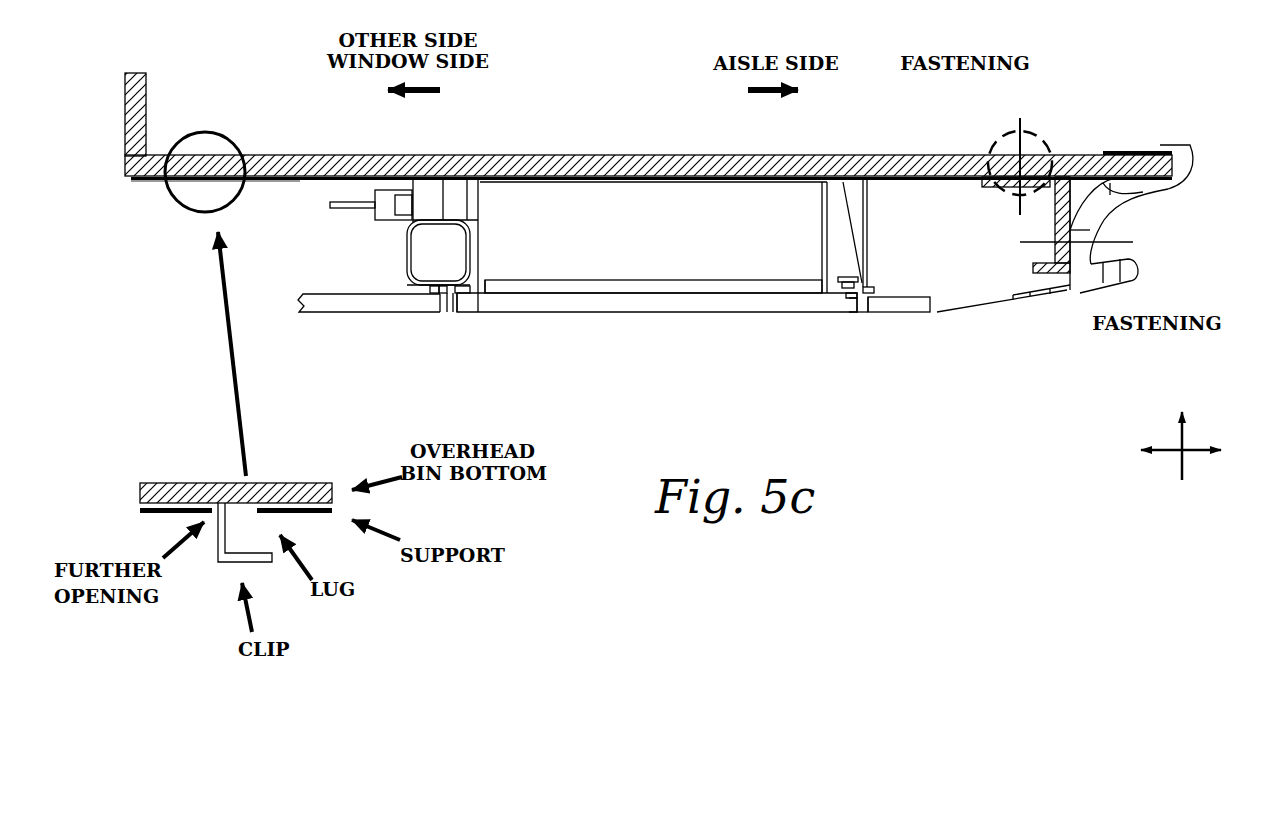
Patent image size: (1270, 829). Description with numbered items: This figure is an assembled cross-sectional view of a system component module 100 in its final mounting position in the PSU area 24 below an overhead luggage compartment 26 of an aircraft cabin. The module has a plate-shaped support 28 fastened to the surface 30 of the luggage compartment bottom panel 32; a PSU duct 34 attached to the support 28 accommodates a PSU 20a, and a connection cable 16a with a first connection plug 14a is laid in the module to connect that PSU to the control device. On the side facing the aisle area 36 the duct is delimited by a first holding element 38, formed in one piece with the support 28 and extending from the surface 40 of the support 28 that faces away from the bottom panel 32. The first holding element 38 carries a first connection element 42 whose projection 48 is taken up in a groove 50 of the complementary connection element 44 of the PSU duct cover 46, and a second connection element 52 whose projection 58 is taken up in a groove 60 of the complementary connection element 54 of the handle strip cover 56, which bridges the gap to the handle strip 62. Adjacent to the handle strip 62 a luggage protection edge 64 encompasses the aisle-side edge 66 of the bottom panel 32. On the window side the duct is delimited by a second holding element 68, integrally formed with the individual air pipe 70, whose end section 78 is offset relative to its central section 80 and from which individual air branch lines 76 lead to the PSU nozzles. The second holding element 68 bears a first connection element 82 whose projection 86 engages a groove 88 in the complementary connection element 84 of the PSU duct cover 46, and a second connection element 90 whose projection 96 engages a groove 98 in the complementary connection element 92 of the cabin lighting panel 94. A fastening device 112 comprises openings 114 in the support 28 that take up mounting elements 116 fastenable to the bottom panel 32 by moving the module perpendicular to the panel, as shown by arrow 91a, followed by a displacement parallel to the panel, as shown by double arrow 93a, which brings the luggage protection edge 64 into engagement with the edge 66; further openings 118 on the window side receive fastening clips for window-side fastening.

The first connection plug 14a is at (404, 198).
The connection cable 16a is at (372, 192).
The PSU 20a is at (668, 253).
The PSU area 24 is at (386, 335).
The overhead luggage compartment 26 is at (298, 92).
The plate-shaped support 28 is at (255, 183).
The surface of the luggage compartment bottom panel 30 is at (150, 189).
The luggage compartment bottom panel 32 is at (263, 158).
The PSU duct 34 is at (540, 287).
The aisle area 36 is at (1202, 238).
The first holding element 38 is at (852, 182).
The surface of the support 40 is at (280, 183).
The first connection element 42 is at (841, 312).
The complementary connection element 44 is at (828, 266).
The PSU duct cover 46 is at (628, 314).
The projection 48 is at (847, 300).
The groove 50 is at (847, 277).
The second connection element 52 is at (872, 302).
The complementary connection element 54 is at (858, 322).
The handle strip cover 56 is at (916, 305).
The projection 58 is at (873, 290).
The groove 60 is at (866, 288).
The handle strip 62 is at (1136, 268).
The luggage protection edge 64 is at (1178, 148).
The edge of the luggage compartment bottom panel 66 is at (1138, 155).
The second holding element 68 is at (414, 198).
The individual air pipe 70 is at (408, 285).
The individual air branch line 76 is at (446, 195).
The end section 78 is at (409, 263).
The central section 80 is at (410, 242).
The first connection element 82 is at (489, 287).
The complementary connection element 84 is at (452, 314).
The projection 86 is at (472, 300).
The groove 88 is at (462, 321).
The second connection element 90 is at (408, 288).
The complementary connection element 92 is at (447, 306).
The cabin lighting panel 94 is at (312, 306).
The projection 96 is at (433, 291).
The groove 98 is at (442, 293).
The system component module 100 is at (1054, 338).
The fastening device 112 is at (1051, 131).
The opening 114 is at (985, 184).
The mounting element 116 is at (1010, 200).
The further opening 118 is at (151, 570).
The arrow 91a is at (1183, 470).
The double arrow 93a is at (1198, 446).